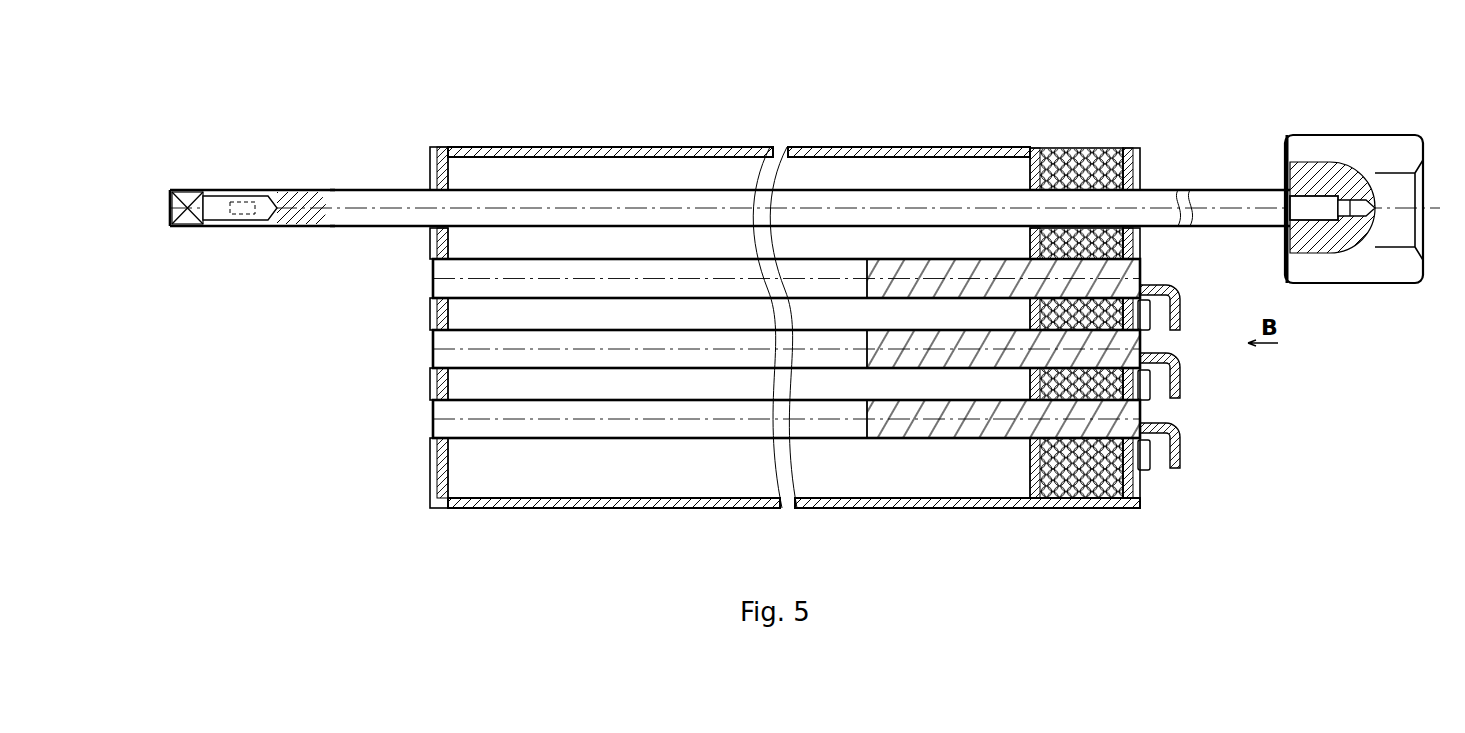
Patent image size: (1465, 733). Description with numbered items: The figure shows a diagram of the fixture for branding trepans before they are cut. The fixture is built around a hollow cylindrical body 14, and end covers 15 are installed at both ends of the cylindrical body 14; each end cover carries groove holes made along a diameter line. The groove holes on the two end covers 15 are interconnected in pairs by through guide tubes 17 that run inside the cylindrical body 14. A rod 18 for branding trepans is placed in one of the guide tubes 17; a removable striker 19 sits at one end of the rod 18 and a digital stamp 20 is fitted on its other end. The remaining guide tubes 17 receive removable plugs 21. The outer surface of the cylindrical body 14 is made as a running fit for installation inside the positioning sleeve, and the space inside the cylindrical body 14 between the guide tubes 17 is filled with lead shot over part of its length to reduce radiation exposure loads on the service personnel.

The hollow cylindrical body 14 is at (870, 148).
The end covers 15 is at (432, 147).
The through guide tubes 17 is at (670, 258).
The rod 18 is at (1210, 203).
The removable striker 19 is at (1377, 152).
The digital stamp 20 is at (170, 192).
The removable plugs 21 is at (1183, 440).